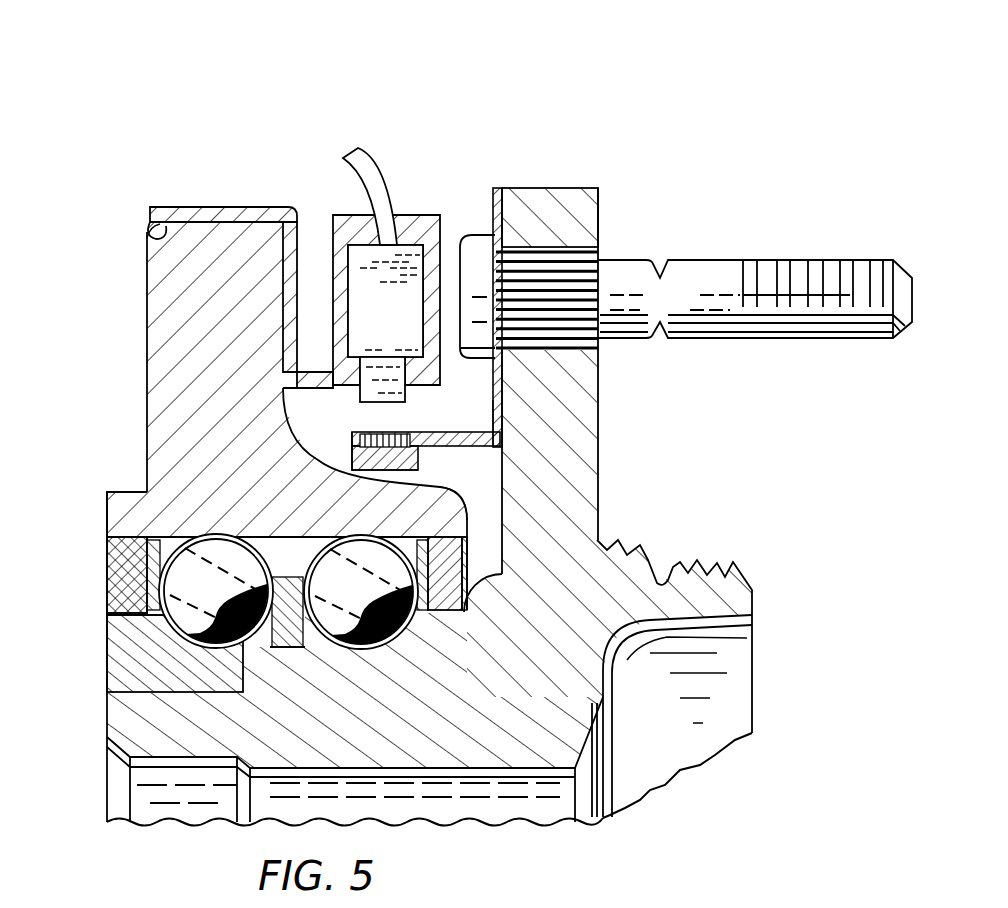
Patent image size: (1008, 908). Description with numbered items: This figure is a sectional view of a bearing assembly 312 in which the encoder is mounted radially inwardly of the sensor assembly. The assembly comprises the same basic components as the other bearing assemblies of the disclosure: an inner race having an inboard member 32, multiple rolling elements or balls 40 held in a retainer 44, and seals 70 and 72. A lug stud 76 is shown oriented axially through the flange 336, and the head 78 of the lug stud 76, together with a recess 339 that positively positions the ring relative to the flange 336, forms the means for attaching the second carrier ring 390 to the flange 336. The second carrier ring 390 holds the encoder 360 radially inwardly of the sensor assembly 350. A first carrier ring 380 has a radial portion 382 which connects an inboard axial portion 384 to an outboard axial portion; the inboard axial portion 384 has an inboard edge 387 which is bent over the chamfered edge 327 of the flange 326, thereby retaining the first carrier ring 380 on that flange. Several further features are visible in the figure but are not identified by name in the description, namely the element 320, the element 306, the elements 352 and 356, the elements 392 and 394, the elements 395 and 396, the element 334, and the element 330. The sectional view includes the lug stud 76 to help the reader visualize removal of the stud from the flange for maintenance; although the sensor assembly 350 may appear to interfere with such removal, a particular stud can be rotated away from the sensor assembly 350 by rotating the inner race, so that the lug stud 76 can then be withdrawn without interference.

The bearing assembly 312 is at (400, 62).
The housing 320 is at (116, 405).
The flange 326 is at (150, 292).
The chamfered edge 327 is at (147, 238).
The first carrier ring 380 is at (223, 246).
The inboard axial portion 384 is at (222, 212).
The inboard edge 387 is at (157, 210).
The radial portion 382 is at (300, 248).
The channel bottom 306 is at (310, 368).
The sensor assembly 350 is at (389, 249).
The solenoid coil 352 is at (408, 336).
The lead tube 356 is at (352, 148).
The thin wall 392 is at (491, 190).
The wall portion 394 is at (498, 410).
The head 78 is at (472, 236).
The recess 339 is at (497, 220).
The lug stud 76 is at (828, 340).
The flange 336 is at (600, 398).
The second carrier ring 390 is at (466, 468).
The encoder 360 is at (400, 432).
The retainer block 395 is at (360, 470).
The retainer end 396 is at (352, 440).
The lower housing 334 is at (120, 707).
The inboard member 32 is at (108, 652).
The tube 330 is at (507, 780).
The seal 70 is at (115, 583).
The seal 72 is at (465, 553).
The retainer 44 is at (172, 540).
The balls 40 is at (262, 565).